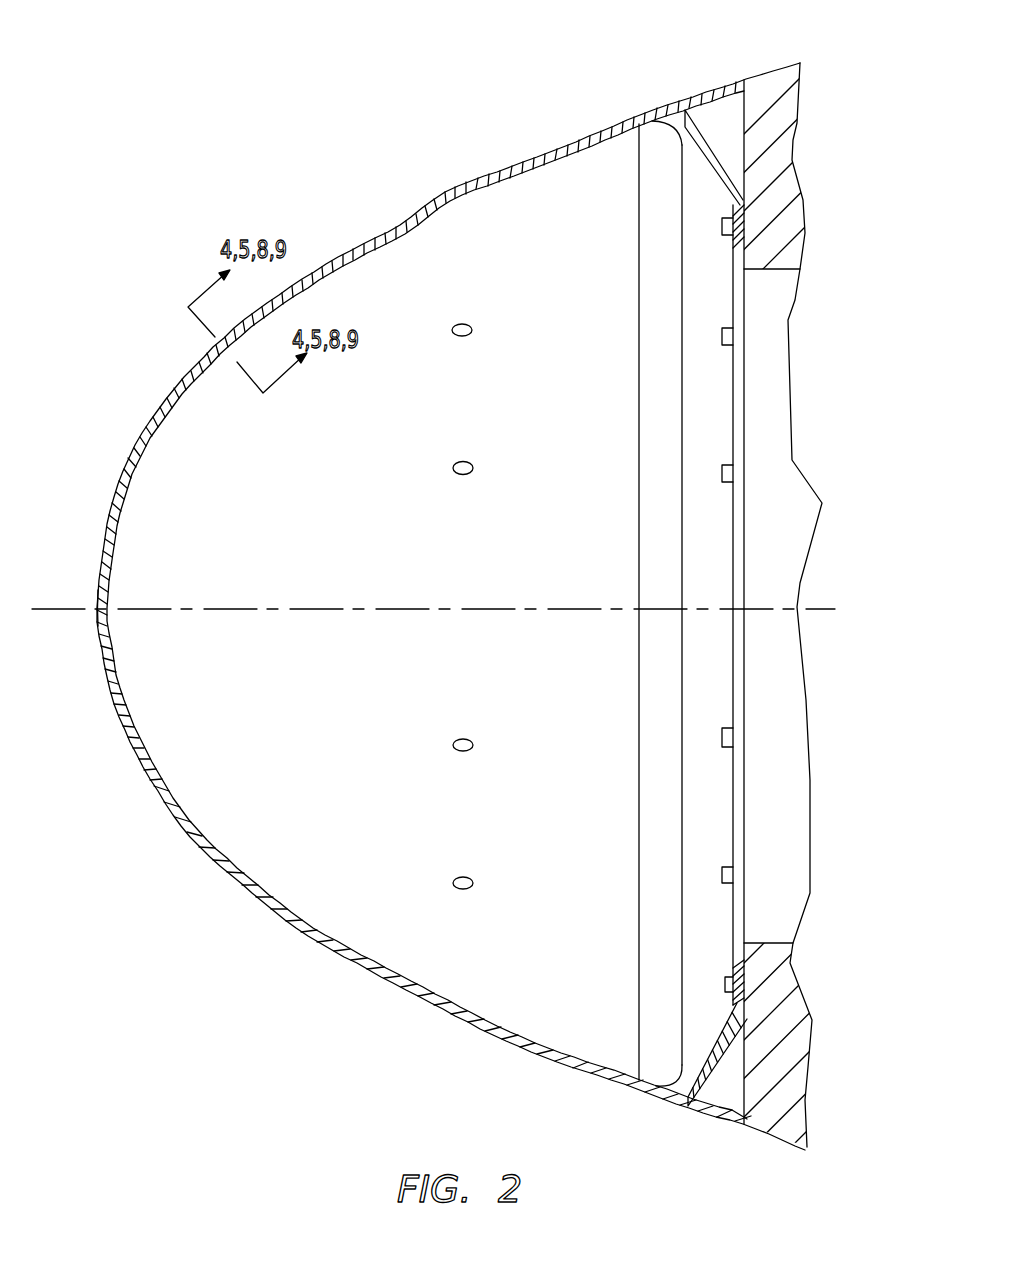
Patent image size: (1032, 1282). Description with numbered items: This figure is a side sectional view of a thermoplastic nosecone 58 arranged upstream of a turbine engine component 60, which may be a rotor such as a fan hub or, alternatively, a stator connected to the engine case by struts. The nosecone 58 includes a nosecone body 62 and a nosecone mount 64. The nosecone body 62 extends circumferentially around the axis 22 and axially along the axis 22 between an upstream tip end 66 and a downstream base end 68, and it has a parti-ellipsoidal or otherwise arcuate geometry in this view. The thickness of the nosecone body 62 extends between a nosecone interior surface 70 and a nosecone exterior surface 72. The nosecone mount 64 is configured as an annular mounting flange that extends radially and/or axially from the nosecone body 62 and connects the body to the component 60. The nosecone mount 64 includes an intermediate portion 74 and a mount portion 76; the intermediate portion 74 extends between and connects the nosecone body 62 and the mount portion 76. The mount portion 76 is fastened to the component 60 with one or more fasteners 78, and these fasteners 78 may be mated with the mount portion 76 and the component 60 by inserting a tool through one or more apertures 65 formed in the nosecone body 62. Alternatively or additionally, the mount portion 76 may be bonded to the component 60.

The axis 22 is at (828, 607).
The thermoplastic nosecone 58 is at (84, 156).
The turbine engine component 60 is at (798, 142).
The nosecone body 62 is at (376, 236).
The nosecone mount 64 is at (704, 189).
The apertures 65 is at (457, 193).
The upstream tip end 66 is at (96, 612).
The downstream base end 68 is at (697, 92).
The nosecone interior surface 70 is at (548, 165).
The nosecone exterior surface 72 is at (540, 152).
The intermediate portion 74 is at (697, 165).
The mount portion 76 is at (735, 250).
The fasteners 78 is at (722, 228).